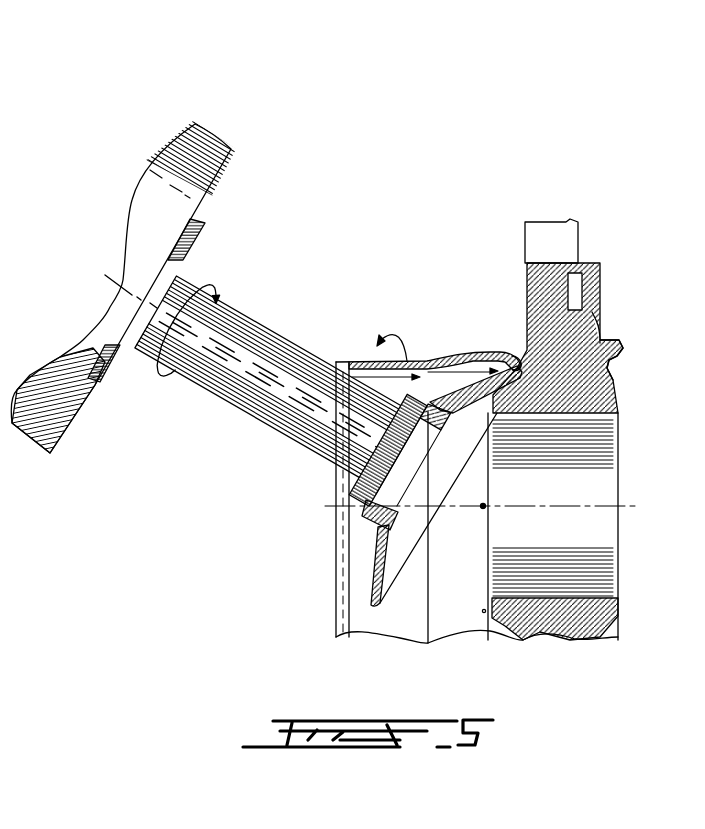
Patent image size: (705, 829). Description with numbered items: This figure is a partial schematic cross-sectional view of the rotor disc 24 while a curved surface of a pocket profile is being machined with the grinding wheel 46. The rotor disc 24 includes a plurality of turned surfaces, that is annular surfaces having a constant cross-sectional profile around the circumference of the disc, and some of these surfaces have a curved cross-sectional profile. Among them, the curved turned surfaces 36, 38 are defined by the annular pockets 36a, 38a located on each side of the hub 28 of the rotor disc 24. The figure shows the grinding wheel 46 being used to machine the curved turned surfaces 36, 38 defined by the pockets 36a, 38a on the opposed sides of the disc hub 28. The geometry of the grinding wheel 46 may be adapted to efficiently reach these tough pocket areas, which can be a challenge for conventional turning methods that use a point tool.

The rotor disc 24 is at (622, 183).
The hub 28 is at (603, 613).
The curved turned surface 36 is at (513, 357).
The annular pocket 36a is at (503, 362).
The curved turned surface 38 is at (613, 353).
The annular pocket 38a is at (609, 365).
The grinding wheel 46 is at (373, 572).